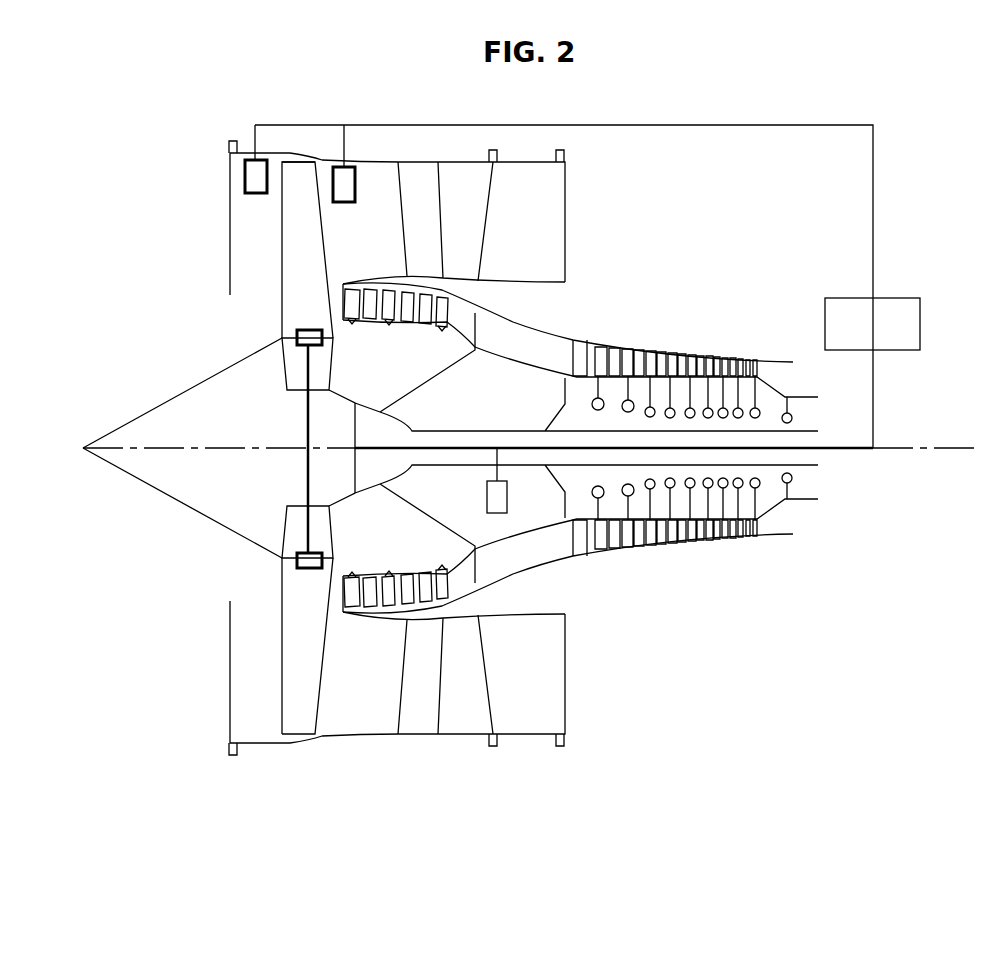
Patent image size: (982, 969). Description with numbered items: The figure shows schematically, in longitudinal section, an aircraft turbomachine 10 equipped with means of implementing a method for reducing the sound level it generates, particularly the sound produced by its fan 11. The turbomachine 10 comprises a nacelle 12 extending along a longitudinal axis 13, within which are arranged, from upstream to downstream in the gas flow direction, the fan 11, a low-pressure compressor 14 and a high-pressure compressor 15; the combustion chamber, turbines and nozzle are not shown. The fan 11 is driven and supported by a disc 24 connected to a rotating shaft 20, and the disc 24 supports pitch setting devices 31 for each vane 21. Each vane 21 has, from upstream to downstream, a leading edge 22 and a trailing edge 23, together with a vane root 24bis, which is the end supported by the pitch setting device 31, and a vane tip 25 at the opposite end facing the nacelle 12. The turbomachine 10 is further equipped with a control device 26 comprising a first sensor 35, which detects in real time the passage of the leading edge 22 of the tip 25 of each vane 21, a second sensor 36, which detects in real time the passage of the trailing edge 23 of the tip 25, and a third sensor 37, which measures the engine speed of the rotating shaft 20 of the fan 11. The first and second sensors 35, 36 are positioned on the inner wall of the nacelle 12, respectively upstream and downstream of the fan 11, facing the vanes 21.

The turbomachine 10 is at (654, 302).
The fan 11 is at (280, 200).
The nacelle 12 is at (350, 737).
The longitudinal axis 13 is at (193, 450).
The low-pressure compressor 14 is at (457, 313).
The high-pressure compressor 15 is at (689, 354).
The rotating shaft 20 is at (532, 424).
The vane 21 is at (303, 233).
The leading edge 22 is at (280, 700).
The trailing edge 23 is at (320, 686).
The disc 24 is at (285, 368).
The vane root 24bis is at (297, 333).
The vane tip 25 is at (300, 183).
The control device 26 is at (913, 318).
The pitch setting device 31 is at (307, 337).
The first sensor 35 is at (255, 178).
The second sensor 36 is at (343, 183).
The third sensor 37 is at (490, 498).